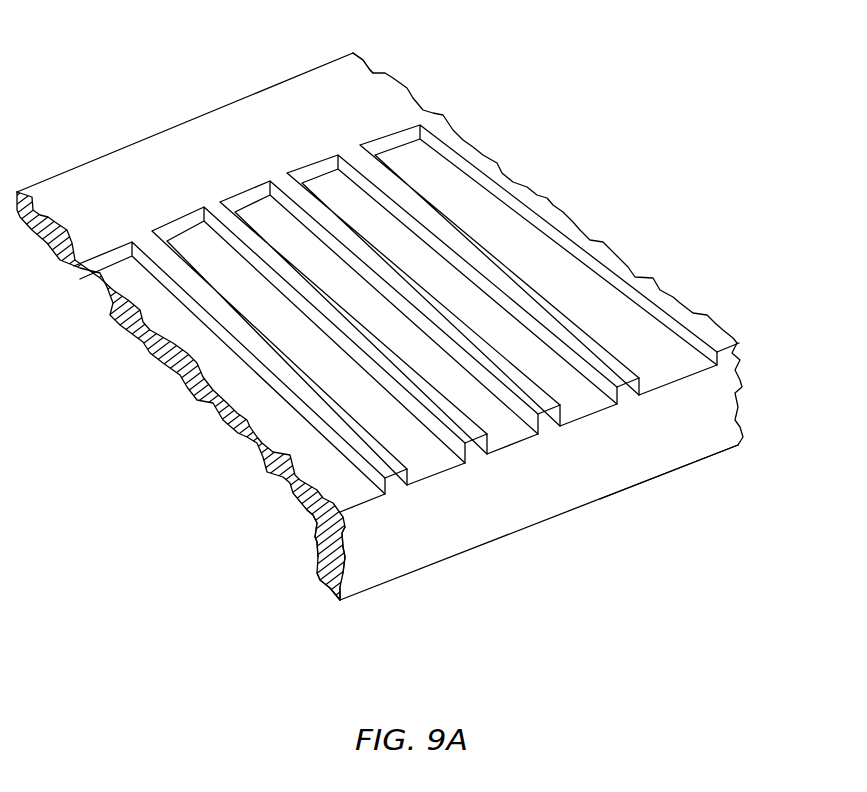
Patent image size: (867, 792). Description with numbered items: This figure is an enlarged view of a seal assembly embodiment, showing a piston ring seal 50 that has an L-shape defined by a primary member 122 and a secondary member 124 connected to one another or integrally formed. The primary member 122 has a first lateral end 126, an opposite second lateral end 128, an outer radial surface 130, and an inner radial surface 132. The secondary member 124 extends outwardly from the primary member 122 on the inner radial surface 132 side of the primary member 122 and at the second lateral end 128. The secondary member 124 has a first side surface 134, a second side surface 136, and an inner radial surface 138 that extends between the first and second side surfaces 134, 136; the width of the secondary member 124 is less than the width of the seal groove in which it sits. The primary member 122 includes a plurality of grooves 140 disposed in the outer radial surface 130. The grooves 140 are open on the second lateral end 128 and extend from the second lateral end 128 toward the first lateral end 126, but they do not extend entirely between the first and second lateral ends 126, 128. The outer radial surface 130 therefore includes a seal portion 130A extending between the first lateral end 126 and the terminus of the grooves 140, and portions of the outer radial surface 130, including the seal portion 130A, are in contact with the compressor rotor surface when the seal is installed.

The piston ring seal 50 is at (519, 78).
The primary member 122 is at (392, 471).
The secondary member 124 is at (683, 497).
The first lateral end 126 is at (72, 167).
The second lateral end 128 is at (732, 358).
The outer radial surface 130 is at (445, 133).
The seal portion 130A is at (197, 130).
The inner radial surface 132 is at (238, 436).
The first side surface 134 is at (315, 552).
The second side surface 136 is at (537, 495).
The inner radial surface 138 is at (327, 587).
The grooves 140 is at (493, 318).